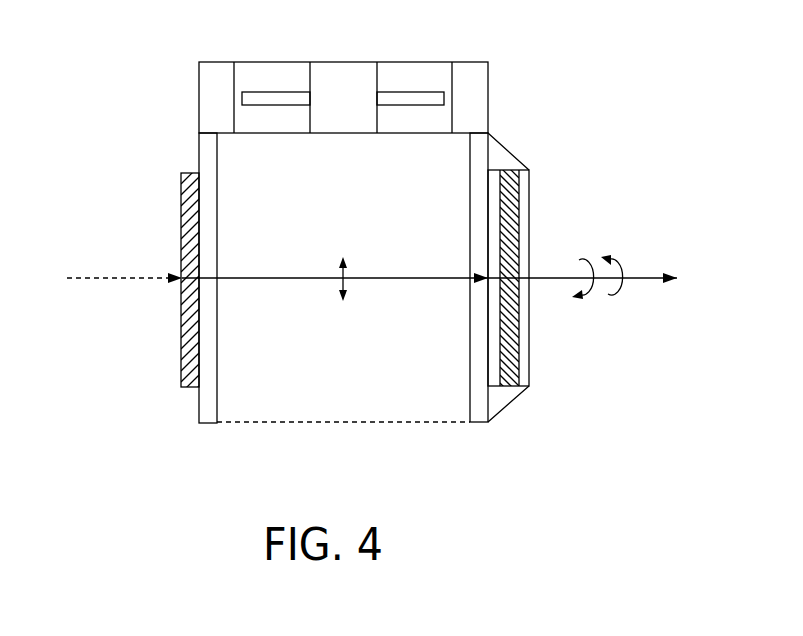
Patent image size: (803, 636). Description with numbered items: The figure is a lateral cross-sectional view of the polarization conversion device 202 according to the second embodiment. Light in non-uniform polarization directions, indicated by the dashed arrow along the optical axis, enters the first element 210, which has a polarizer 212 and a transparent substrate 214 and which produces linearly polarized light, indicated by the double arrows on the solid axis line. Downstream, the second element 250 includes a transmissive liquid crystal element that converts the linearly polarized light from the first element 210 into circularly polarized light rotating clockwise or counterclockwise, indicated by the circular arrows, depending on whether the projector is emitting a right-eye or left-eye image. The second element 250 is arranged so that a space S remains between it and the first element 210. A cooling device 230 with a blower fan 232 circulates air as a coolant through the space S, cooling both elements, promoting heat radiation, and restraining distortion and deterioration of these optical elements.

The polarization conversion device 202 is at (533, 43).
The cooling device 230 is at (389, 79).
The blower fan 232 is at (414, 89).
The first element 210 is at (265, 278).
The transparent substrate 214 is at (199, 153).
The polarizer 212 is at (181, 180).
The second element 250 is at (529, 338).
The space S is at (345, 430).